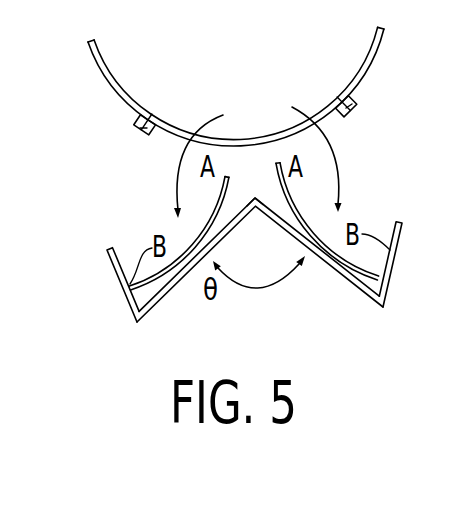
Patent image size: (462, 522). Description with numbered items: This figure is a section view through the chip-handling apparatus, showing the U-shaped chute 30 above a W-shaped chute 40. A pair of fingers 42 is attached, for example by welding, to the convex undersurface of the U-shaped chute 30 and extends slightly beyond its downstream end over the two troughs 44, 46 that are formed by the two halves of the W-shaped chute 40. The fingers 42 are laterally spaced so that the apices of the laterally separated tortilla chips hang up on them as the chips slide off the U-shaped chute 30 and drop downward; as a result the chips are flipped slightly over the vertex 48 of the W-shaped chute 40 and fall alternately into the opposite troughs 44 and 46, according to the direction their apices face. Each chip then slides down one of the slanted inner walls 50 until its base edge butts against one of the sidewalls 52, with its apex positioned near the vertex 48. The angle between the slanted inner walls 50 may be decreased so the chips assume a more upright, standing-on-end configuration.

The U-shaped chute 30 is at (381, 52).
The W-shaped chute 40 is at (256, 283).
The fingers 42 is at (138, 128).
The trough 44 is at (142, 213).
The trough 46 is at (373, 196).
The vertex 48 is at (257, 210).
The slanted inner walls 50 is at (168, 288).
The sidewalls 52 is at (124, 293).